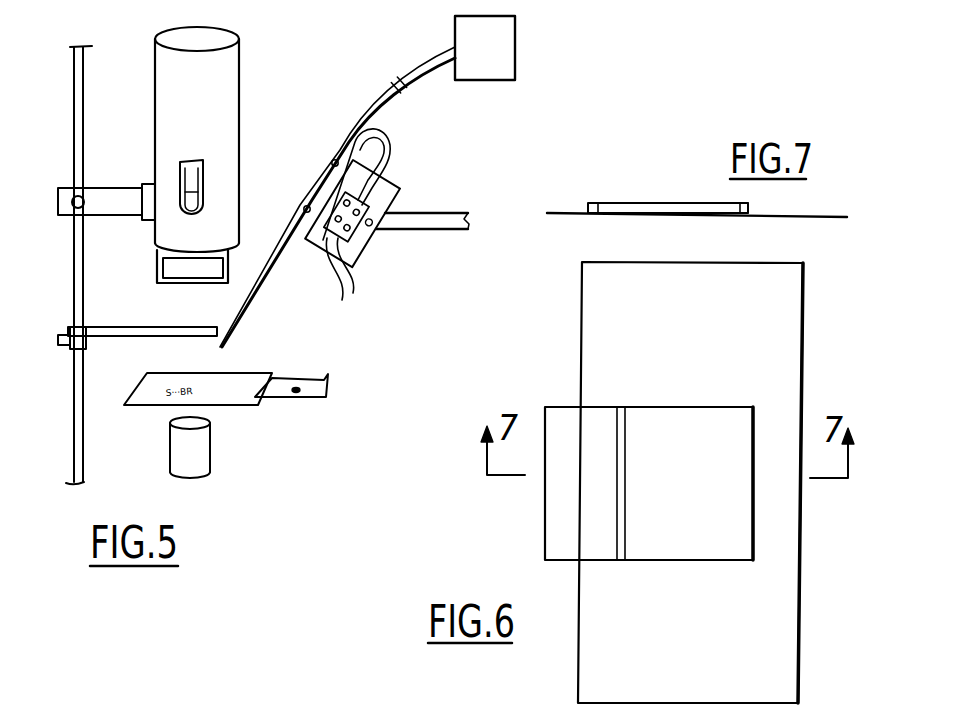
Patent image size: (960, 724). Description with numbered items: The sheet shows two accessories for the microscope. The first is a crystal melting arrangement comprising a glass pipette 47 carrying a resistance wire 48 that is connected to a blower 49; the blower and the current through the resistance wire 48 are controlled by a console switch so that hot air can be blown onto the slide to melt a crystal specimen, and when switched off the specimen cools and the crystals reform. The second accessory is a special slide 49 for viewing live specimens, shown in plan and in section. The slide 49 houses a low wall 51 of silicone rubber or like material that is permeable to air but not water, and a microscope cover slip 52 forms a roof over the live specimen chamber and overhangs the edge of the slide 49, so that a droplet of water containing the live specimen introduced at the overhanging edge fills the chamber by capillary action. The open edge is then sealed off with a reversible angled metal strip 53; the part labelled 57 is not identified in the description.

In FIG. 5, the glass pipette 47 is at (387, 257).
In FIG. 5, the resistance wire 48 is at (357, 140).
In FIG. 5, the blower 49 is at (503, 67).
In FIG. 6, the blower 49 is at (790, 295).
In FIG. 7, the blower 49 is at (823, 218).
In FIG. 6, the low wall 51 is at (693, 407).
In FIG. 7, the microscope cover slip 52 is at (628, 203).
In FIG. 6, the reversible angled metal strip 53 is at (617, 425).
In FIG. 6, the edge strip 57 is at (755, 432).
In FIG. 7, the edge strip 57 is at (742, 203).